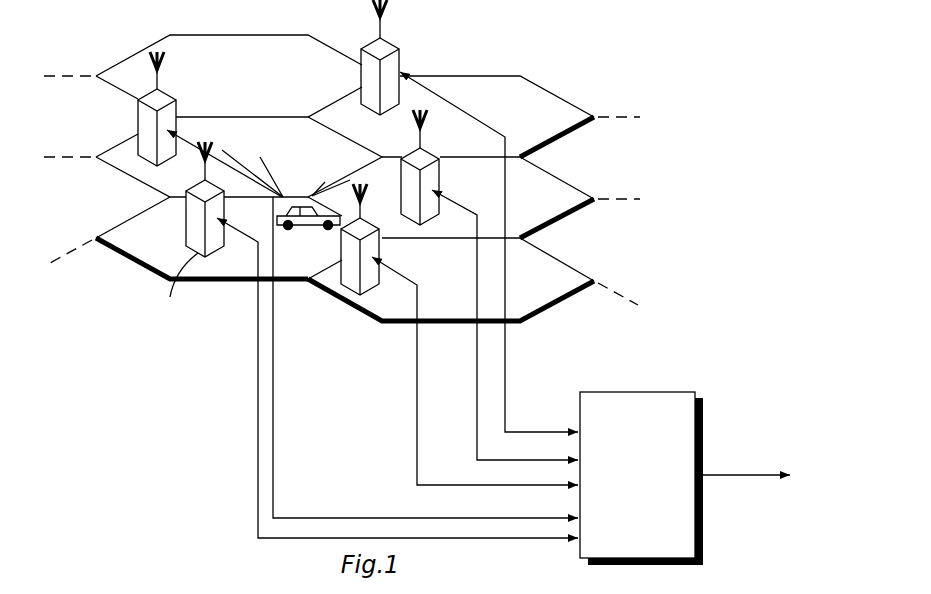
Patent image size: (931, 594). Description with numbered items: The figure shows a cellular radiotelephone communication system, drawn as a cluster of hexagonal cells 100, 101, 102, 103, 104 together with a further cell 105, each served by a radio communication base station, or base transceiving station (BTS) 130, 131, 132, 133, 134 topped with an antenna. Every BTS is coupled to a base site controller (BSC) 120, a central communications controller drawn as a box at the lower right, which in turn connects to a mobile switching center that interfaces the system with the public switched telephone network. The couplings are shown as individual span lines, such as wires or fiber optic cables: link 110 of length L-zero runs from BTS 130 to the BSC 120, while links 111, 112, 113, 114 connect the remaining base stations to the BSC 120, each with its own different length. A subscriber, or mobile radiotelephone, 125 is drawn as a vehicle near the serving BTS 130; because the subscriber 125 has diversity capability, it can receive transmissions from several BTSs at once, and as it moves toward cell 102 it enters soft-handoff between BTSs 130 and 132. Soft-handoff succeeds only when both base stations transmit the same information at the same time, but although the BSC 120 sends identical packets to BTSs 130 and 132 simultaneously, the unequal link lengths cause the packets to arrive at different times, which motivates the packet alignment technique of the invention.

The cell 100 is at (128, 212).
The cell 101 is at (122, 138).
The cell 102 is at (578, 293).
The cell 103 is at (563, 181).
The cell 104 is at (497, 76).
The cell 105 is at (228, 33).
The link 110 is at (257, 458).
The link 111 is at (273, 350).
The link 112 is at (415, 380).
The link 113 is at (475, 427).
The link 114 is at (504, 407).
The base site controller 120 is at (648, 392).
The subscriber 125 is at (303, 207).
The base transceiving station 130 is at (187, 195).
The base transceiving station 131 is at (165, 97).
The base transceiving station 132 is at (341, 265).
The base transceiving station 133 is at (418, 148).
The base transceiving station 134 is at (396, 48).